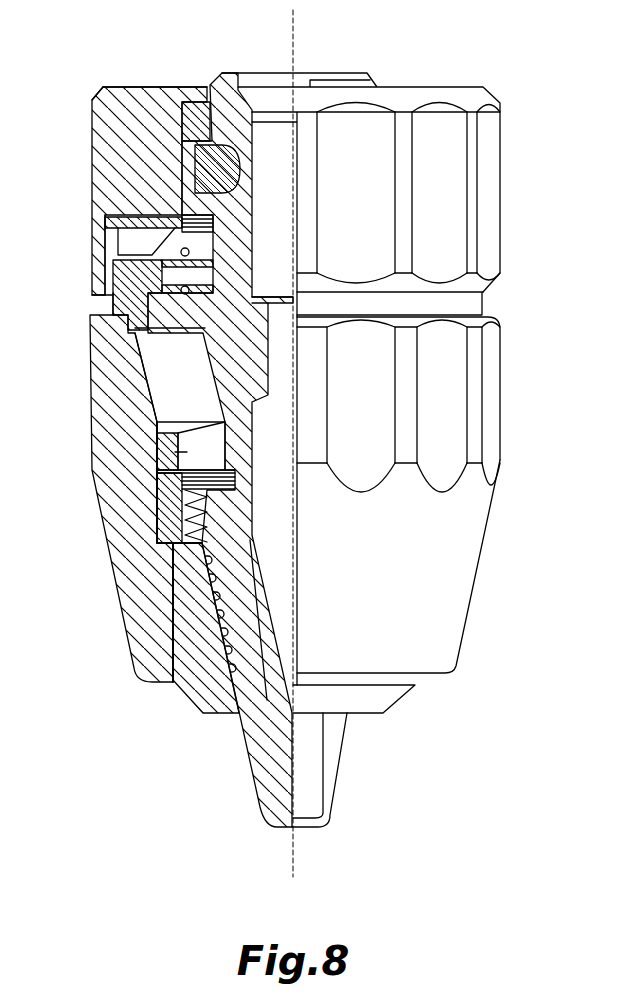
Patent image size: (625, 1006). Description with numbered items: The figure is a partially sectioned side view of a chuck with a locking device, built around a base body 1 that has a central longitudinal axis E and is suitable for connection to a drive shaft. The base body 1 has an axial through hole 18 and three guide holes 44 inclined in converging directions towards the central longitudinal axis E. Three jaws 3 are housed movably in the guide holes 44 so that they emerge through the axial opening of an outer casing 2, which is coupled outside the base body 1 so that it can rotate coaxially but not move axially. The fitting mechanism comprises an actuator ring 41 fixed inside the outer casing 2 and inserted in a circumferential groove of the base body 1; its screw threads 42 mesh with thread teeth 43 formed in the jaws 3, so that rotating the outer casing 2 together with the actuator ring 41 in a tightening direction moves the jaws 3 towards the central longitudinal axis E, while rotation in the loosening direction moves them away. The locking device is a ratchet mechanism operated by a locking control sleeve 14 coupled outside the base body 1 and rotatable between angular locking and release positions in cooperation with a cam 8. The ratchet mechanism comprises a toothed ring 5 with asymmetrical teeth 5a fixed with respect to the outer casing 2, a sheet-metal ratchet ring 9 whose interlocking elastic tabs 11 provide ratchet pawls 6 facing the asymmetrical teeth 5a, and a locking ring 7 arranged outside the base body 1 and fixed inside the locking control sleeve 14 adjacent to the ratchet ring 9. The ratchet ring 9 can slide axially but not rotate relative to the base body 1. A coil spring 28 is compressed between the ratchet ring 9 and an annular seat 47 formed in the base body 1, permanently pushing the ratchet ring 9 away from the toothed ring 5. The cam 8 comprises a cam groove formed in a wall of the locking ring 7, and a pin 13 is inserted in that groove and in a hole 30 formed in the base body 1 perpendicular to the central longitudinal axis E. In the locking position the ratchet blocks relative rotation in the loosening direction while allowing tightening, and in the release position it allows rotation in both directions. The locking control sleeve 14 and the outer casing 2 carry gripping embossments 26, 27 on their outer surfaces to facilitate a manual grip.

The base body 1 is at (187, 700).
The outer casing 2 is at (122, 577).
The jaws 3 is at (253, 752).
The toothed ring 5 is at (108, 310).
The asymmetrical teeth 5a is at (113, 293).
The ratchet pawls 6 is at (115, 262).
The locking ring 7 is at (193, 120).
The cam 8 is at (147, 93).
The ratchet ring 9 is at (118, 207).
The interlocking elastic tabs 11 is at (135, 245).
The pin 13 is at (187, 167).
The locking control sleeve 14 is at (100, 160).
The axial through hole 18 is at (293, 502).
The gripping embossments 26 is at (490, 150).
The gripping embossments 27 is at (493, 413).
The coil spring 28 is at (188, 248).
The hole 30 is at (230, 133).
The actuator ring 41 is at (187, 473).
The screw threads 42 is at (107, 530).
The thread teeth 43 is at (200, 608).
The guide holes 44 is at (187, 450).
The annular seat 47 is at (118, 300).
The central longitudinal axis E is at (296, 44).